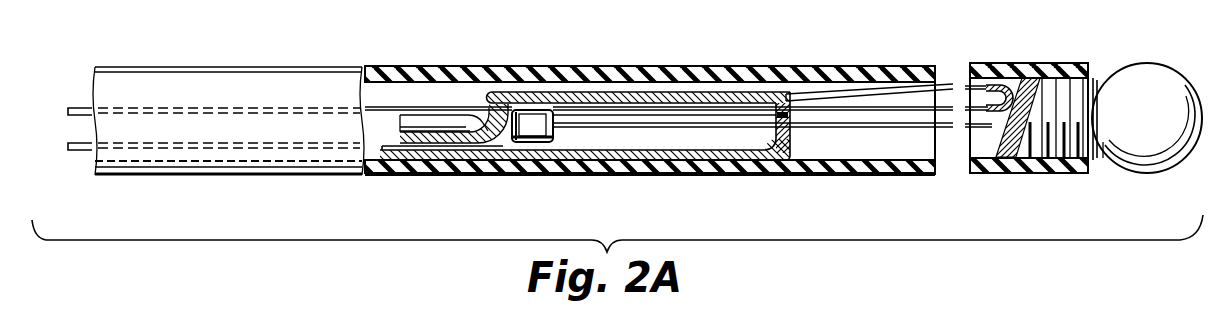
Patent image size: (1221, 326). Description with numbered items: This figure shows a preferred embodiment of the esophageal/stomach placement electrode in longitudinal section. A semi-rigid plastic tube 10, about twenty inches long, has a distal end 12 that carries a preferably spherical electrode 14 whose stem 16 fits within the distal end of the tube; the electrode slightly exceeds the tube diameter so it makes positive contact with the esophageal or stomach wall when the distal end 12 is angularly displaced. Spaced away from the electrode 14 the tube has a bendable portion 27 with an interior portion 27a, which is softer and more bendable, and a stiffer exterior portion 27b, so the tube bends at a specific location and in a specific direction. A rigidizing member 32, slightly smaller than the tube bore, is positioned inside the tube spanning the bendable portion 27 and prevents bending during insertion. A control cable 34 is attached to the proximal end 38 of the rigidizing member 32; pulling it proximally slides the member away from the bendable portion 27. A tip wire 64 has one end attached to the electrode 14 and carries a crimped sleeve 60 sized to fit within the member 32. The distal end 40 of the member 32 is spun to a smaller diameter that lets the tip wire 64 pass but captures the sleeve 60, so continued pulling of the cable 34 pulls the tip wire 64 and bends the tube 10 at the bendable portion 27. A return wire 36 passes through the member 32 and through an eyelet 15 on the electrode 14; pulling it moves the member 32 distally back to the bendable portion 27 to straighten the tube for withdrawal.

The tube 10 is at (305, 62).
The distal end 12 is at (1033, 117).
The electrode 14 is at (1146, 125).
The eyelet 15 is at (1023, 78).
The stem 16 is at (1060, 150).
The bendable portion 27 is at (608, 129).
The interior portion 27a is at (638, 165).
The exterior portion 27b is at (638, 72).
The rigidizing member 32 is at (705, 152).
The control cable 34 is at (88, 150).
The return wire 36 is at (93, 108).
The proximal end 38 is at (463, 153).
The distal end 40 is at (791, 150).
The sleeve 60 is at (532, 120).
The tip wire 64 is at (846, 128).